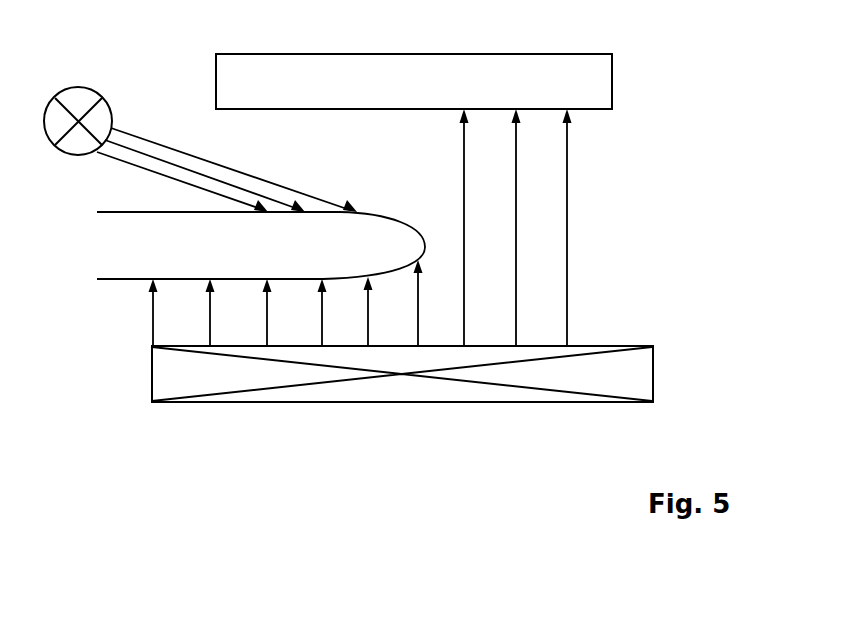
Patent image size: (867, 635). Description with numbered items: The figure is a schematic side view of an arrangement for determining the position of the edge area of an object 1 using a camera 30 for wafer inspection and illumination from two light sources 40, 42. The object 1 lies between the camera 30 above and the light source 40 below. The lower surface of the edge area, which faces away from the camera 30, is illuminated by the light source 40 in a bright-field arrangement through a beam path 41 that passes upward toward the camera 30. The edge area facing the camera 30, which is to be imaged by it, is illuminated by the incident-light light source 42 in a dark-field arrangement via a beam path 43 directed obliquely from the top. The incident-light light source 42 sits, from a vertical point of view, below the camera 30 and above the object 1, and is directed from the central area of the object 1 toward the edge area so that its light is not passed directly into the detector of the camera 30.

The object 1 is at (174, 262).
The camera 30 is at (503, 90).
The light source 40 is at (148, 379).
The beam path 41 is at (519, 301).
The incident-light light source 42 is at (78, 88).
The beam path 43 is at (155, 169).